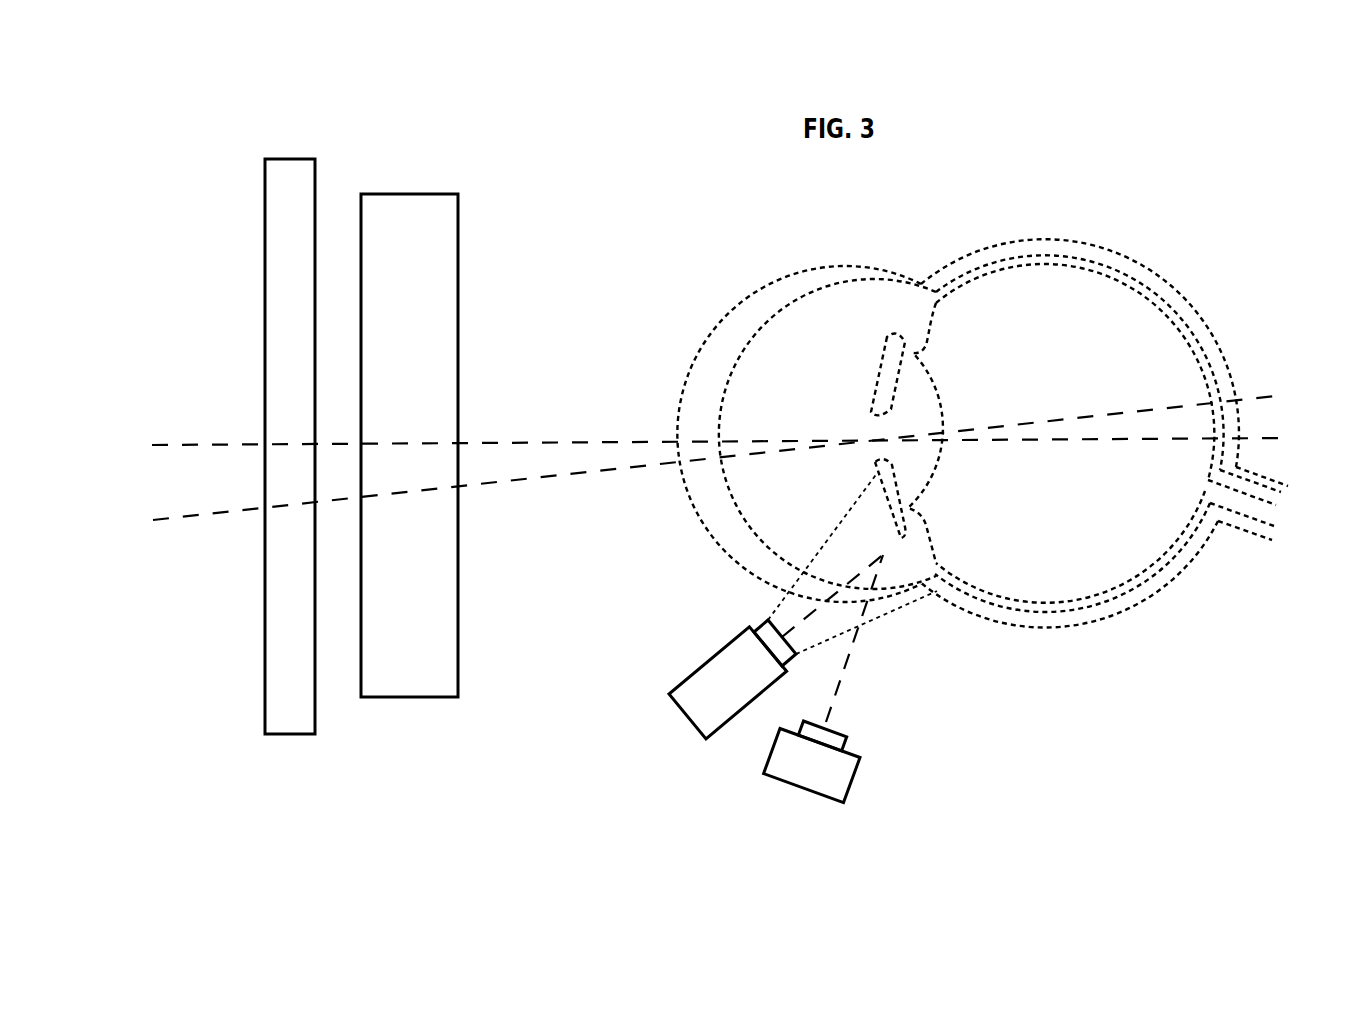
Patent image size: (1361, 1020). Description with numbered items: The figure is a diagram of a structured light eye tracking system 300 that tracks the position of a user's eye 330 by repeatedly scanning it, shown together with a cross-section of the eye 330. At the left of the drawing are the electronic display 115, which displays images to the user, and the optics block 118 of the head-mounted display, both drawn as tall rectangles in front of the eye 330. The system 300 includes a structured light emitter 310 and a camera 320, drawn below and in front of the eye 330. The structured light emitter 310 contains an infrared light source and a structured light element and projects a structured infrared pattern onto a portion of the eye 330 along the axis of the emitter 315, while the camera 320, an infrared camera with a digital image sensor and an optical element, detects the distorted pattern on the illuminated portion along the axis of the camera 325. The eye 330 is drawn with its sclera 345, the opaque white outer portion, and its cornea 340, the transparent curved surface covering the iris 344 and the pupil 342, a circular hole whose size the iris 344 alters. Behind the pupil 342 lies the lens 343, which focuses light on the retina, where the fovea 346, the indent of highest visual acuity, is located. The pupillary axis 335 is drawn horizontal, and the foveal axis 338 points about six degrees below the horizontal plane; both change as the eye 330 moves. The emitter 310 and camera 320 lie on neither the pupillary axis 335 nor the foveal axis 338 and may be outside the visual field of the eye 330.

The electronic display 115 is at (292, 148).
The optics block 118 is at (405, 190).
The structured light eye tracking system 300 is at (660, 240).
The structured light emitter 310 is at (674, 719).
The axis of the emitter 315 is at (832, 592).
The camera 320 is at (947, 868).
The axis of the camera 325 is at (852, 680).
The eye 330 is at (1004, 414).
The pupillary axis 335 is at (593, 438).
The foveal axis 338 is at (620, 570).
The cornea 340 is at (846, 374).
The pupil 342 is at (868, 438).
The lens 343 is at (933, 470).
The iris 344 is at (890, 488).
The sclera 345 is at (903, 293).
The fovea 346 is at (1274, 378).